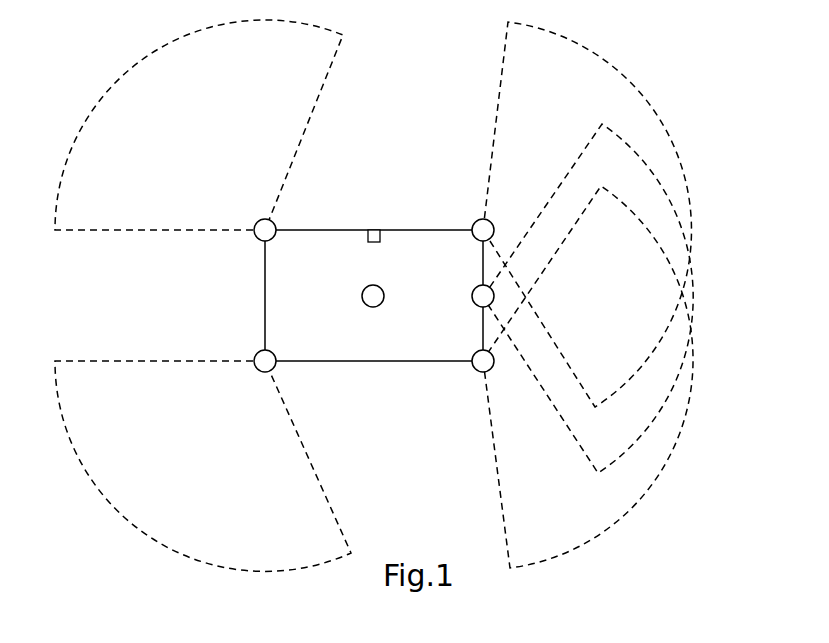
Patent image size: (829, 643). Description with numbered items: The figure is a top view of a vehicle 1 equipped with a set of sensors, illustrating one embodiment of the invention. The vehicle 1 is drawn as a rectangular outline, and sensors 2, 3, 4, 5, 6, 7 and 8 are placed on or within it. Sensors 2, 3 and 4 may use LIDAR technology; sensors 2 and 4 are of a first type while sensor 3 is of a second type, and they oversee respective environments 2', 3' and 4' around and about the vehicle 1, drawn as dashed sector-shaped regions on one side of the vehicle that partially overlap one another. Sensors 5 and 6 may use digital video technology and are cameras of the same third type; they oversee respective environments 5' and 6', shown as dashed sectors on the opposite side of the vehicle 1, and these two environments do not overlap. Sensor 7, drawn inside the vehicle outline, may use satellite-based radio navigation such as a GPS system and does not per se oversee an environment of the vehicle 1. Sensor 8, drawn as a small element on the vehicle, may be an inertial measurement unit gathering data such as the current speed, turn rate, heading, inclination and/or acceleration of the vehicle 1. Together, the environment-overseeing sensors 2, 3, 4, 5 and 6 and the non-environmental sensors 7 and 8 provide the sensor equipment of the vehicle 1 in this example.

The vehicle 1 is at (390, 361).
The sensor 2 is at (457, 414).
The sensor 3 is at (446, 245).
The sensor 4 is at (447, 173).
The sensor 5 is at (212, 252).
The sensor 6 is at (219, 346).
The sensor 7 is at (363, 292).
The sensor 8 is at (376, 230).
The environment 2' is at (610, 377).
The environment 3' is at (635, 298).
The environment 4' is at (621, 214).
The environment 5' is at (190, 123).
The environment 6' is at (203, 466).